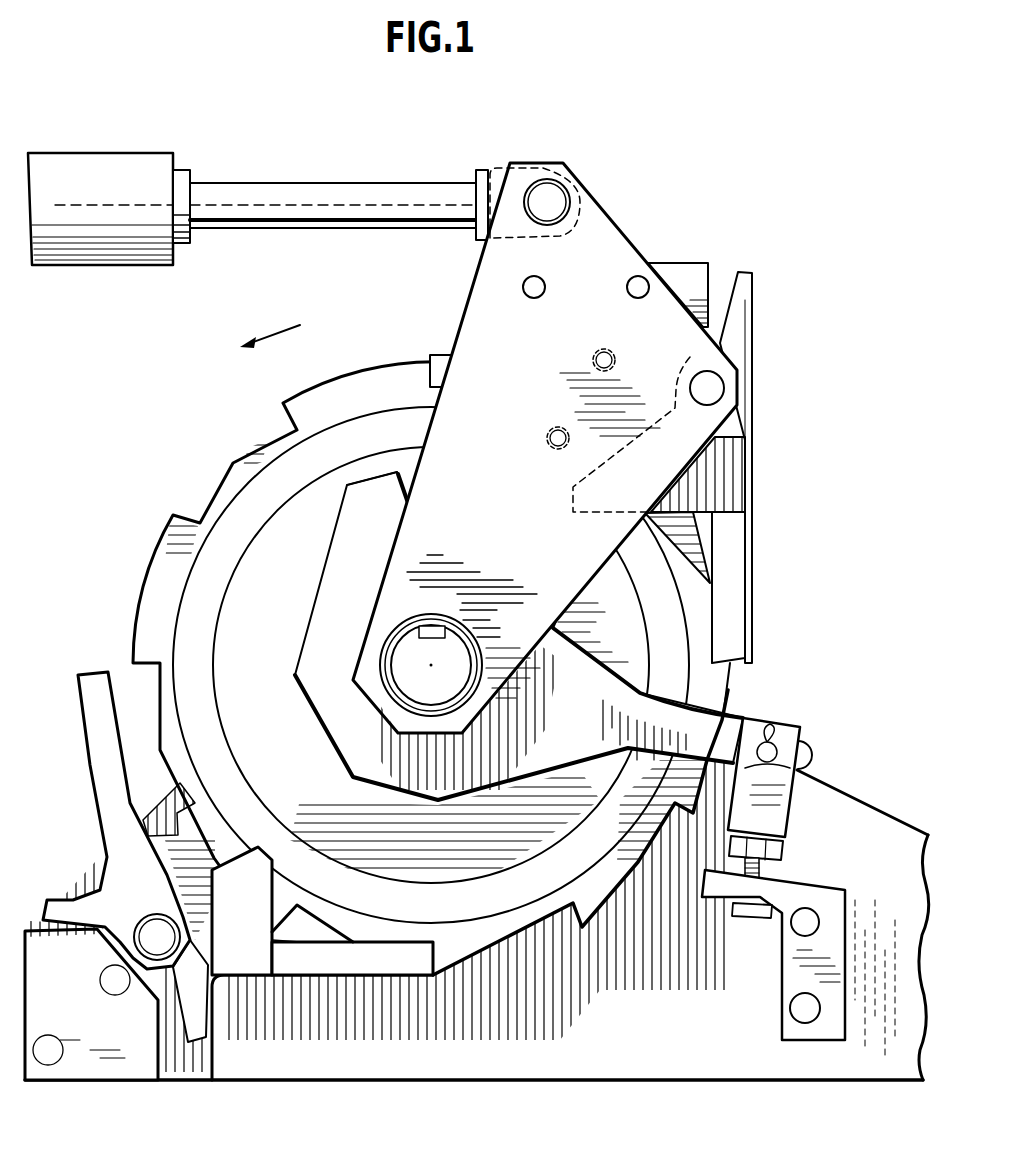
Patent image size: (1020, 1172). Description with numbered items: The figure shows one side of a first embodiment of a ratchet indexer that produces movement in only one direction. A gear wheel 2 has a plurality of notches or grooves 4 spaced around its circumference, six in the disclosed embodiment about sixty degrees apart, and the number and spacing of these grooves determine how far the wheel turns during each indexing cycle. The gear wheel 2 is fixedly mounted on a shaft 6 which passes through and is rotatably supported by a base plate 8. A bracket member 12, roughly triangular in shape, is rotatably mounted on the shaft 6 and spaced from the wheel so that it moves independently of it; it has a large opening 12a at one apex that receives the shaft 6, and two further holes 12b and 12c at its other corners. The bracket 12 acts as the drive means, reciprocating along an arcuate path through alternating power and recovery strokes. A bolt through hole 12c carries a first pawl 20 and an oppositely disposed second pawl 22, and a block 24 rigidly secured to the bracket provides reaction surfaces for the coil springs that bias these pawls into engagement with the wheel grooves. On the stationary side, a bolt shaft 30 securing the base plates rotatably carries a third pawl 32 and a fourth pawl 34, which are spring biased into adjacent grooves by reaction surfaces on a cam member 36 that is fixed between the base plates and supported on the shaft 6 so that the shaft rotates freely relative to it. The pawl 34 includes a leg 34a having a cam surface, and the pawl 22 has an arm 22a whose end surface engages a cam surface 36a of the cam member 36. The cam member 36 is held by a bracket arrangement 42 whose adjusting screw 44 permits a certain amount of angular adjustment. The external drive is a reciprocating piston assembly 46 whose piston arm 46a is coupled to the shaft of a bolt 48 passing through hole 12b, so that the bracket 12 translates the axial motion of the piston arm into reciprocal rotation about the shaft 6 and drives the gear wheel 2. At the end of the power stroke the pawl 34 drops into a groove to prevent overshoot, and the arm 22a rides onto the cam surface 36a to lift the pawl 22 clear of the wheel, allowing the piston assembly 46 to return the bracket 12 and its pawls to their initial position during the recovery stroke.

The gear wheel 2 is at (563, 830).
The notches or grooves 4 is at (201, 498).
The shaft 6 is at (431, 690).
The base plate 8 is at (512, 1065).
The bracket member 12 is at (474, 306).
The opening 12a is at (390, 636).
The hole 12b is at (566, 201).
The hole 12c is at (724, 390).
The first pawl 20 is at (438, 365).
The second pawl 22 is at (745, 600).
The arm 22a is at (722, 498).
The block 24 is at (700, 286).
The shaft 30 is at (140, 941).
The third pawl 32 is at (405, 963).
The fourth pawl 34 is at (98, 730).
The leg 34a is at (178, 858).
The cam member 36 is at (535, 752).
The cam surface 36a is at (409, 480).
The bracket arrangement 42 is at (820, 836).
The adjusting screw 44 is at (717, 862).
The piston assembly 46 is at (303, 156).
The piston arm 46a is at (380, 216).
The bolt 48 is at (541, 190).